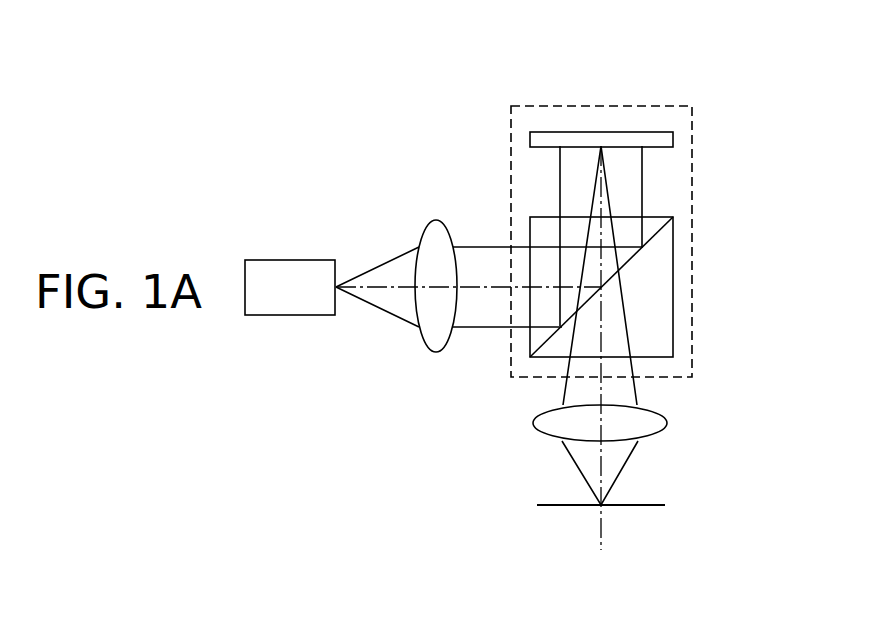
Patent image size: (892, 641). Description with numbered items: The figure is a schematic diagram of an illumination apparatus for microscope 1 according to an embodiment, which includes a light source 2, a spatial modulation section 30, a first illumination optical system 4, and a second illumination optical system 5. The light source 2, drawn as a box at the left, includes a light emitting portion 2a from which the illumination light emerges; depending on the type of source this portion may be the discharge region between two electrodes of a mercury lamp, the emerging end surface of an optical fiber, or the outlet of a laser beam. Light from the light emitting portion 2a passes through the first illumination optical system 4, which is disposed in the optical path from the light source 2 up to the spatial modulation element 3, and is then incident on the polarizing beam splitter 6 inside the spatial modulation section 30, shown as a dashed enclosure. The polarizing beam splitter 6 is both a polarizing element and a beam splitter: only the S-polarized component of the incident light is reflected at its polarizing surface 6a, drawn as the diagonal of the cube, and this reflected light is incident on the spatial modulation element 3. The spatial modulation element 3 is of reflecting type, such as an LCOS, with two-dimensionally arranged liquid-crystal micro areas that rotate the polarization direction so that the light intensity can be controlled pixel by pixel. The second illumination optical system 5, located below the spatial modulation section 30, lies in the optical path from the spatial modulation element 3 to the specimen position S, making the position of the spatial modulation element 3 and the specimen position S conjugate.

The illumination apparatus for microscope 1 is at (643, 79).
The spatial modulation section 30 is at (697, 117).
The spatial modulation element 3 is at (672, 138).
The polarizing surface 6a is at (643, 247).
The polarizing beam splitter 6 is at (658, 308).
The second illumination optical system 5 is at (657, 425).
The specimen position S is at (665, 505).
The light source 2 is at (278, 268).
The light emitting portion 2a is at (340, 273).
The first illumination optical system 4 is at (443, 235).